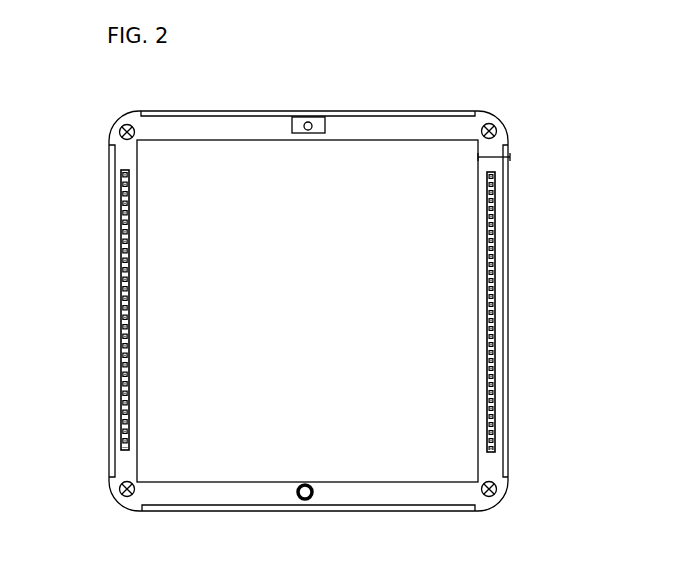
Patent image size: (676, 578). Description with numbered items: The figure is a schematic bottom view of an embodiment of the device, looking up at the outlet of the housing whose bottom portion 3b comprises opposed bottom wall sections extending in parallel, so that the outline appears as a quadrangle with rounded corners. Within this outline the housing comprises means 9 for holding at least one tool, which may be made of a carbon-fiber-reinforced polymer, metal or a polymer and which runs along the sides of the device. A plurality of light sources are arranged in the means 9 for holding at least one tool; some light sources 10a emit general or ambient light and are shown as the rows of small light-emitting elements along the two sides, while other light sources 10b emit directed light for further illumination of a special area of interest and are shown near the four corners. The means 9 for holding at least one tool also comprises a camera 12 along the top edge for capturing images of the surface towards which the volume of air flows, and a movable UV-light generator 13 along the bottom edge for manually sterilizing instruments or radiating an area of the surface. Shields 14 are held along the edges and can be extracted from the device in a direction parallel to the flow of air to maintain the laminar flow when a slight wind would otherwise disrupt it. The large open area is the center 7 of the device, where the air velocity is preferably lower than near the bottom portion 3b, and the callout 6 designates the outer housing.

The housing 6 is at (502, 115).
The center 7 is at (307, 312).
The shield 14 is at (223, 111).
The light sources emitting directed light 10b is at (119, 132).
The light sources emitting general light 10a is at (125, 371).
The bottom portion 3b is at (483, 178).
The means for holding at least one tool 9 is at (498, 268).
The camera 12 is at (317, 122).
The movable UV-light generator 13 is at (310, 500).